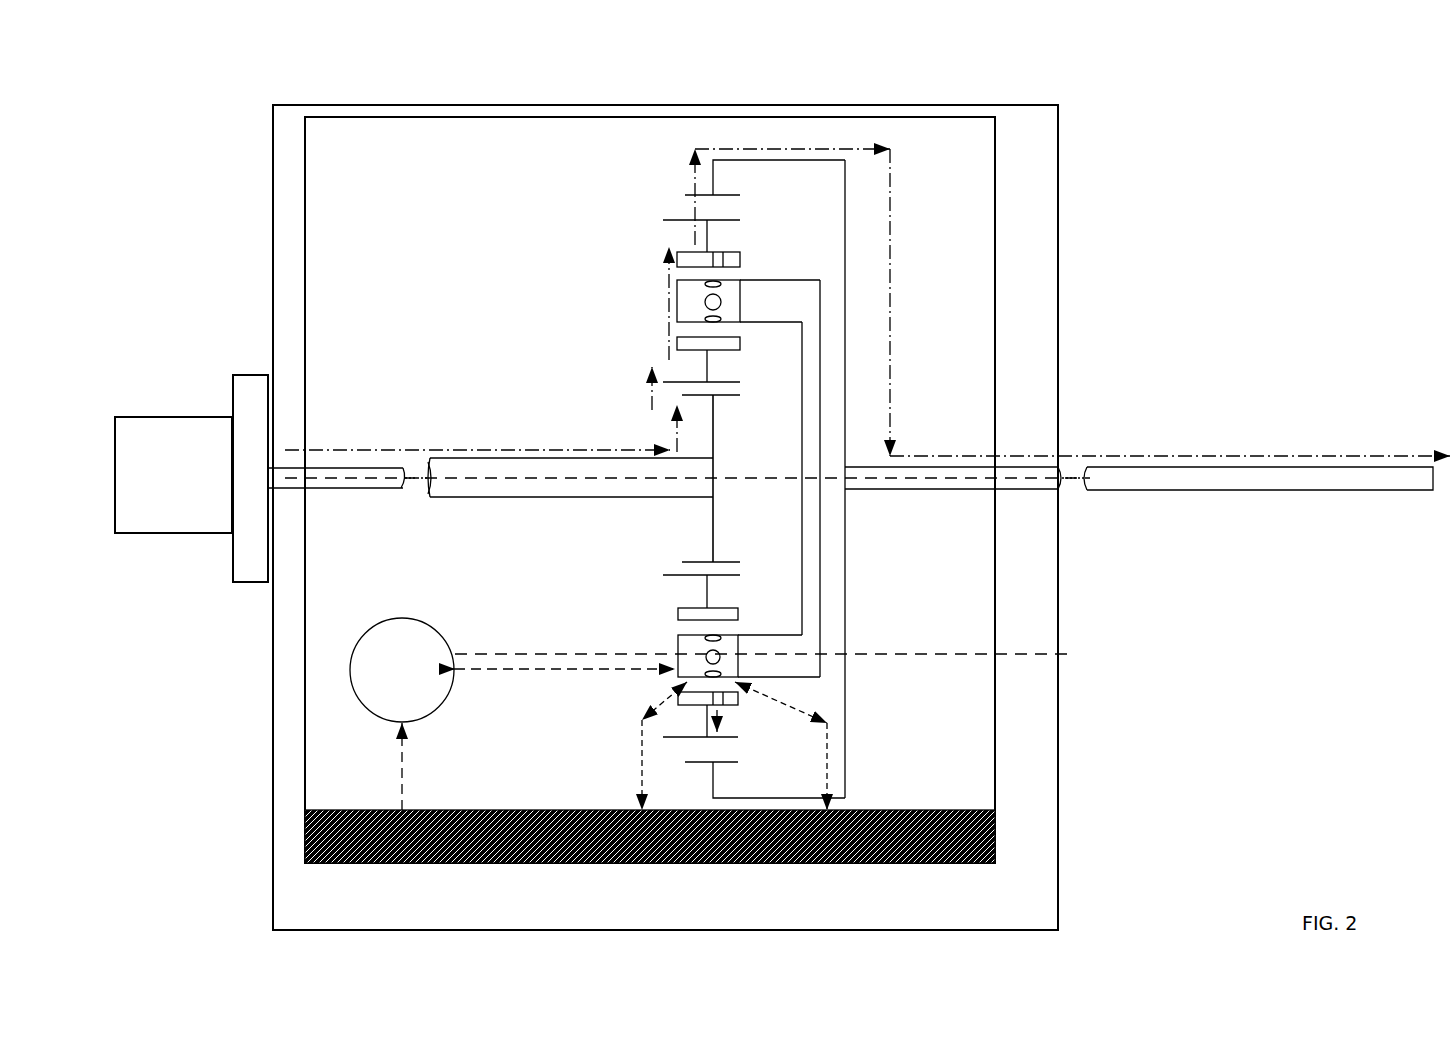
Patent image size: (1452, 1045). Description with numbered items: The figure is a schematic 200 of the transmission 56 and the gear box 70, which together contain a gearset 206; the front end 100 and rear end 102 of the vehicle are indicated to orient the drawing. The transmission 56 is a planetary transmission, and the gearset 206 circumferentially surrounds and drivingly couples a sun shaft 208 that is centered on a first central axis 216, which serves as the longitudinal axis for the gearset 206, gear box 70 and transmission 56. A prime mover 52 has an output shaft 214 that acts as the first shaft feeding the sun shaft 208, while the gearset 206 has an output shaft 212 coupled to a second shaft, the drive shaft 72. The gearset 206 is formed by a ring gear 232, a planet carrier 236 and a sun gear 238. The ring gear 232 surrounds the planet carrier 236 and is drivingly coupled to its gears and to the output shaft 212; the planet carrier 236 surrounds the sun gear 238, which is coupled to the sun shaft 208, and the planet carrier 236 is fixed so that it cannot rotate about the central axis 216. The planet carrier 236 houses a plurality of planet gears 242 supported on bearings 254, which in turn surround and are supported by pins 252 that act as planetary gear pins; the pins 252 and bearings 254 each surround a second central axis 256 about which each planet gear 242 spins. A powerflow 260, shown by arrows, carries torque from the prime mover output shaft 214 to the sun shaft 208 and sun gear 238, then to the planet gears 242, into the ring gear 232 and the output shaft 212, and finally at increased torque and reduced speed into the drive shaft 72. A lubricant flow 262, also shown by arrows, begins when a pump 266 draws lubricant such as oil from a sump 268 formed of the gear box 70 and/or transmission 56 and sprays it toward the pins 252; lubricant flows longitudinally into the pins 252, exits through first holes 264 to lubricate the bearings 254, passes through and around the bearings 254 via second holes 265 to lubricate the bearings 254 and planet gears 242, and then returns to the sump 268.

The transmission 56 is at (273, 105).
The gear box 70 is at (907, 143).
The schematic 200 is at (1250, 89).
The gearset 206 is at (872, 208).
The planet carrier 236 is at (768, 280).
The prime mover 52 is at (175, 417).
The sun shaft 208 is at (488, 458).
The output shaft 214 is at (310, 468).
The first central axis 216 is at (472, 498).
The powerflow 260 is at (617, 450).
The drive shaft 72 is at (1242, 467).
The sun gear 238 is at (713, 562).
The output shaft 212 is at (868, 490).
The pump 266 is at (407, 618).
The second central axis 256 is at (573, 654).
The pins 252 is at (683, 647).
The first holes 264 is at (713, 637).
The lubricant flow 262 is at (593, 669).
The bearings 254 is at (683, 698).
The second holes 265 is at (723, 700).
The planet gears 242 is at (690, 738).
The ring gear 232 is at (713, 763).
The sump 268 is at (517, 797).
The front end 100 is at (85, 687).
The rear end 102 is at (1450, 643).